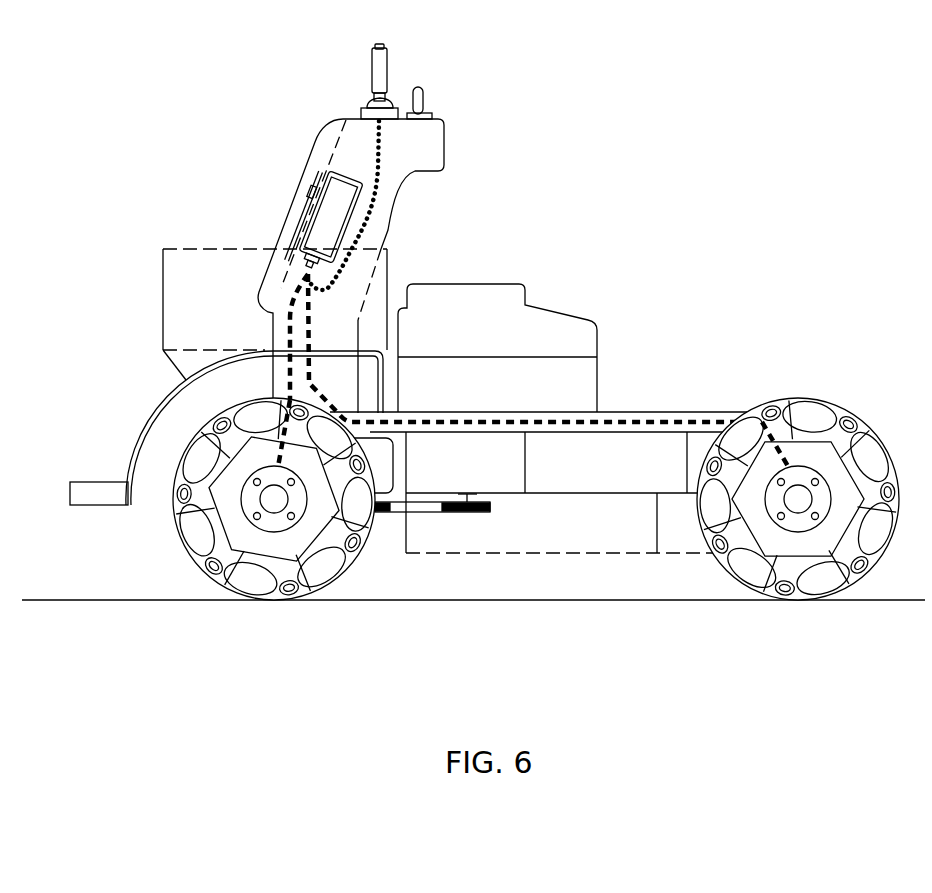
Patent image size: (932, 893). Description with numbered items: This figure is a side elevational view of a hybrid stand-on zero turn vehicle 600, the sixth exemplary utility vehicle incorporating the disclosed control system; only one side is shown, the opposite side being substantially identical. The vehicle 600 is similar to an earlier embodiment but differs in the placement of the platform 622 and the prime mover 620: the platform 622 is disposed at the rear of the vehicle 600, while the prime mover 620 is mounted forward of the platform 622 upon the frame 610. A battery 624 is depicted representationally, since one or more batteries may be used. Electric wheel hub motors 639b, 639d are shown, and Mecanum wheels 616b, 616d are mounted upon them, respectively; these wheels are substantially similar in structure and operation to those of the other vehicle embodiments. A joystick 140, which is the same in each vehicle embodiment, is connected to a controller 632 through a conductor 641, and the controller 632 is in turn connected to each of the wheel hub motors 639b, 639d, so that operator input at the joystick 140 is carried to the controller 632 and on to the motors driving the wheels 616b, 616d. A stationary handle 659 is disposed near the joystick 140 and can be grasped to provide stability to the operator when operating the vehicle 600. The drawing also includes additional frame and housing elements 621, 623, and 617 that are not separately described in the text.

The hybrid stand-on zero turn vehicle 600 is at (473, 316).
The joystick 140 is at (373, 73).
The stationary handle 659 is at (420, 89).
The conductor 641 is at (381, 170).
The controller 632 is at (327, 217).
The battery 624 is at (190, 249).
The prime mover 620 is at (511, 392).
The frame 610 is at (658, 412).
The platform 622 is at (98, 482).
The controller box 621 is at (394, 452).
The mounting bar 623 is at (420, 513).
The lower housing 617 is at (547, 555).
The electric wheel hub motor 639d is at (271, 500).
The electric wheel hub motor 639b is at (795, 500).
The Mecanum wheel 616d is at (198, 562).
The Mecanum wheel 616b is at (722, 562).